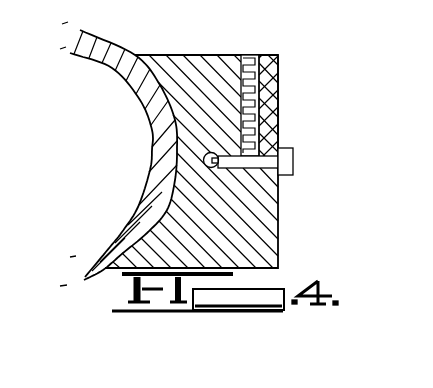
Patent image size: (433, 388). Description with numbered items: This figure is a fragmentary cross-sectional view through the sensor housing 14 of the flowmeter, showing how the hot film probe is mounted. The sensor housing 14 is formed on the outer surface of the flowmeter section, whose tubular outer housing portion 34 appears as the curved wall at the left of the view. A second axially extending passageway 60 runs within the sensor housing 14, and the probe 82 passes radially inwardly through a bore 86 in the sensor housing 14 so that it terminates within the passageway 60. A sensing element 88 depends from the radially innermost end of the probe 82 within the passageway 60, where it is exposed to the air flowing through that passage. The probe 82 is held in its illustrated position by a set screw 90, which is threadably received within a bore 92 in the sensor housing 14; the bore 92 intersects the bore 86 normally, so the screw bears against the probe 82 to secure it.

The sensor housing 14 is at (279, 238).
The outer housing portion 34 is at (112, 69).
The second axially extending passageway 60 is at (216, 156).
The probe 82 is at (288, 147).
The bore 86 is at (281, 177).
The sensing element 88 is at (210, 168).
The set screw 90 is at (276, 66).
The bore 92 is at (275, 110).